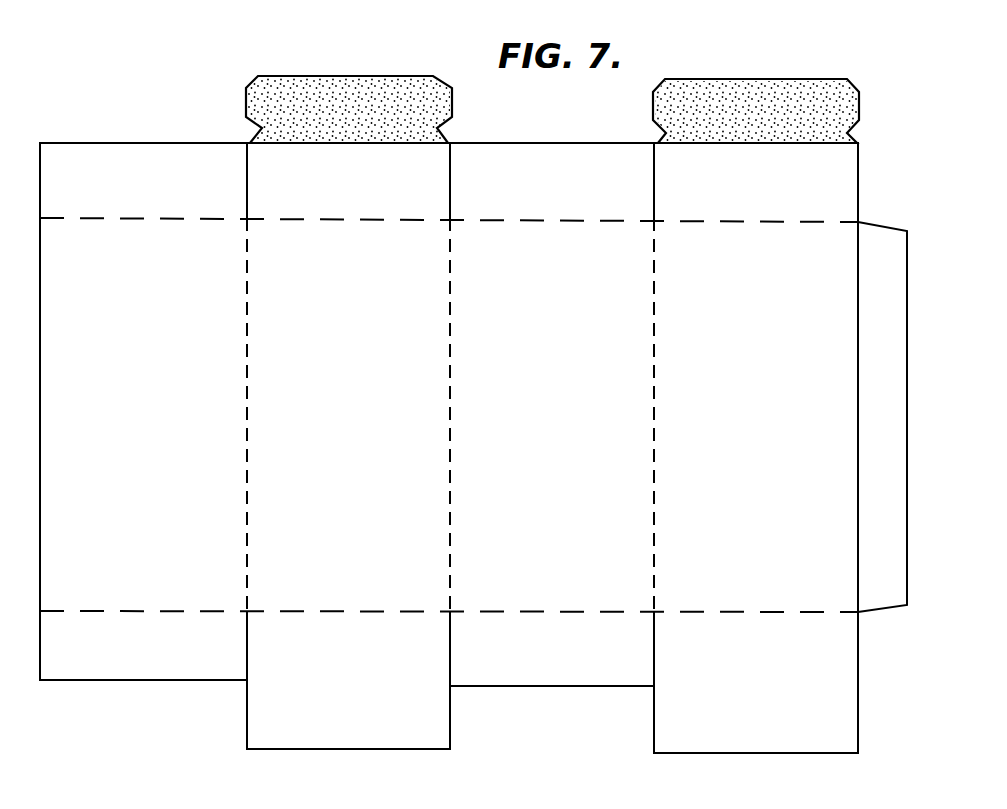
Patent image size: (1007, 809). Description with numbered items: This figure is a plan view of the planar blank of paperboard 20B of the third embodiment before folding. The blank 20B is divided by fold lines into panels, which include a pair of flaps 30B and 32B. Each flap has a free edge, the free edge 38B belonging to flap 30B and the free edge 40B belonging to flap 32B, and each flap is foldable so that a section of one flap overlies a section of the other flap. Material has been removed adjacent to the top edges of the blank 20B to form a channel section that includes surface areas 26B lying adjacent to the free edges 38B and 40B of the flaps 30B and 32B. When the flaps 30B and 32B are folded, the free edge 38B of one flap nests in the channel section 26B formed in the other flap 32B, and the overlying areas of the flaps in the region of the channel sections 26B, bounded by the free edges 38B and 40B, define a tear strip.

The planar blank of paperboard 20B is at (914, 296).
The surface area of channel section 26B is at (320, 98).
The flap 30B is at (430, 170).
The flap 32B is at (835, 162).
The free edge 38B is at (373, 75).
The free edge 40B is at (757, 78).